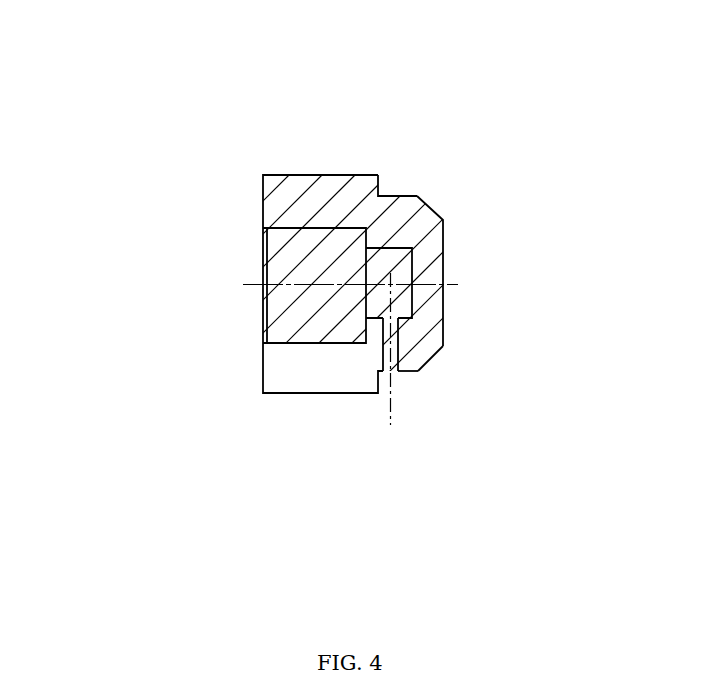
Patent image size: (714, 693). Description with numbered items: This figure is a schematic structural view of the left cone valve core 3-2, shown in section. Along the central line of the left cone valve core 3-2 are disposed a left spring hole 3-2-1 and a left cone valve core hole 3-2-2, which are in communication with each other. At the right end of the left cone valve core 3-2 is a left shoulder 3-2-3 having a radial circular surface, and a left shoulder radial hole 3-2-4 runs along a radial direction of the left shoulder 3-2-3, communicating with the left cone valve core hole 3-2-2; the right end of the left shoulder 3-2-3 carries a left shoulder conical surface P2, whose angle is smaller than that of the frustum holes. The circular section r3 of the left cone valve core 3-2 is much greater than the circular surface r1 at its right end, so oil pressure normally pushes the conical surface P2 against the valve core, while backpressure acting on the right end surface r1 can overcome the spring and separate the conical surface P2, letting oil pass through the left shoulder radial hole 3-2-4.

The left cone valve core 3-2 is at (310, 355).
The left spring hole 3-2-1 is at (293, 325).
The left cone valve core hole 3-2-2 is at (395, 272).
The left shoulder 3-2-3 is at (407, 373).
The left shoulder radial hole 3-2-4 is at (380, 347).
The right end surface r1 is at (380, 185).
The circular section r3 is at (263, 200).
The conical surface P2 is at (432, 360).